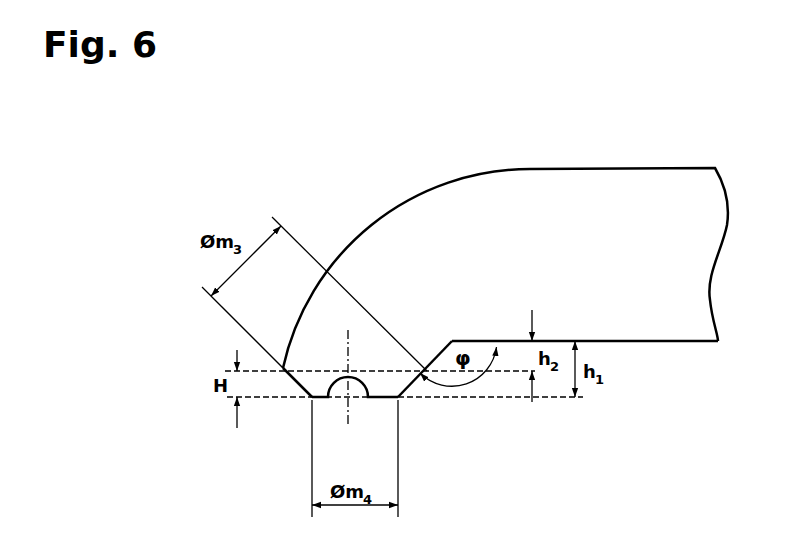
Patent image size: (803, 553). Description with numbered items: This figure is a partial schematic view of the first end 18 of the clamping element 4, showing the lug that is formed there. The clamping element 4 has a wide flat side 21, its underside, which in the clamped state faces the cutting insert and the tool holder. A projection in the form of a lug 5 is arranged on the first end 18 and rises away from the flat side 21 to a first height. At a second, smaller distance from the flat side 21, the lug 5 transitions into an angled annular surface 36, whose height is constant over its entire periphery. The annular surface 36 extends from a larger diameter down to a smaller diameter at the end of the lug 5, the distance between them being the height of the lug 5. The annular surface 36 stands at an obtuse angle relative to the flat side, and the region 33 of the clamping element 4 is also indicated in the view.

The clamping element 4 is at (604, 128).
The tool body section 33 is at (588, 262).
The flat side 21 is at (670, 343).
The lug 5 is at (384, 388).
The annular surface 36 is at (293, 381).
The first end 18 is at (210, 472).